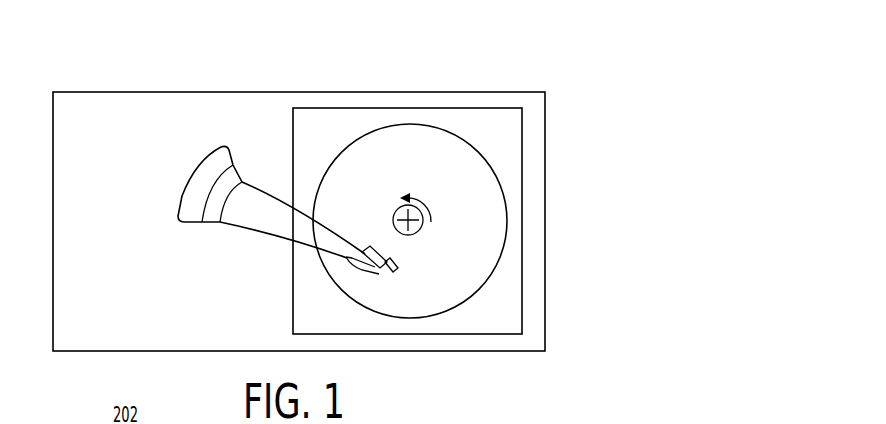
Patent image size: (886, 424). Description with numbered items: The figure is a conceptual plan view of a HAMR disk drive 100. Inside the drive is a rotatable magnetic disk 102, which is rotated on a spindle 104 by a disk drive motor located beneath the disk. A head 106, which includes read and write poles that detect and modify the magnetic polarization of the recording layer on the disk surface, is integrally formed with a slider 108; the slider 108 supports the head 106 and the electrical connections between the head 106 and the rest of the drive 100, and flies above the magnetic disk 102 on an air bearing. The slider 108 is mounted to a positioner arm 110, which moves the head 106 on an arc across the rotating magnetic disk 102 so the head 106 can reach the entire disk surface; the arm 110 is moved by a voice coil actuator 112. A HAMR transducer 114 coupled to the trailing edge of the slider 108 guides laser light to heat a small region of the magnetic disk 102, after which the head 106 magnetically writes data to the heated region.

The HAMR disk drive 100 is at (524, 73).
The magnetic disk 102 is at (462, 151).
The spindle 104 is at (417, 226).
The head 106 is at (375, 258).
The slider 108 is at (356, 271).
The positioner arm 110 is at (252, 226).
The voice coil actuator 112 is at (188, 192).
The HAMR transducer 114 is at (398, 270).